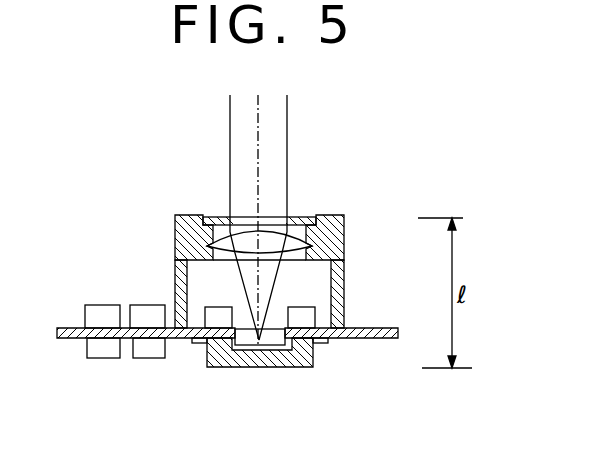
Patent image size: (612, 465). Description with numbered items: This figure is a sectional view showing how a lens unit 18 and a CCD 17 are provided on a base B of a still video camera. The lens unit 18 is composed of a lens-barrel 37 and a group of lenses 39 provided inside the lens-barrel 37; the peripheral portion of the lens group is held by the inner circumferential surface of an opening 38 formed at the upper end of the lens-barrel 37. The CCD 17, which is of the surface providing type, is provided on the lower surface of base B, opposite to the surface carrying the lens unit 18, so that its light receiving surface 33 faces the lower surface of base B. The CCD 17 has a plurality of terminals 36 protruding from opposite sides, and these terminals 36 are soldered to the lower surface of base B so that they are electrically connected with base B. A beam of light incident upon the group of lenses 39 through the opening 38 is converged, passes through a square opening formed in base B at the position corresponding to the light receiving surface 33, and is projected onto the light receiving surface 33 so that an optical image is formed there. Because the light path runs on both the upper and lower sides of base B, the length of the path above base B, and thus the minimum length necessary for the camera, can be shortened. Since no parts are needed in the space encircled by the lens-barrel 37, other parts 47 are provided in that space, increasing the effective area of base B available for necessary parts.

The CCD 17 is at (285, 367).
The lens unit 18 is at (176, 238).
The light receiving surface 33 is at (336, 275).
The terminals 36 is at (320, 344).
The lens-barrel 37 is at (337, 233).
The opening 38 is at (231, 215).
The group of lenses 39 is at (298, 215).
The other parts 47 is at (210, 318).
The base B is at (396, 326).